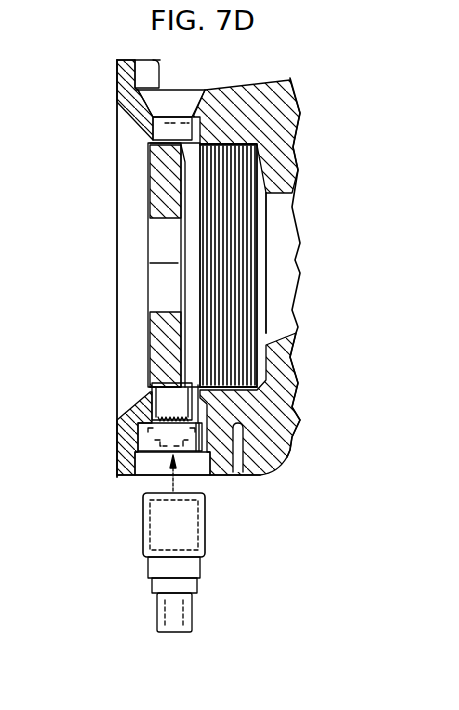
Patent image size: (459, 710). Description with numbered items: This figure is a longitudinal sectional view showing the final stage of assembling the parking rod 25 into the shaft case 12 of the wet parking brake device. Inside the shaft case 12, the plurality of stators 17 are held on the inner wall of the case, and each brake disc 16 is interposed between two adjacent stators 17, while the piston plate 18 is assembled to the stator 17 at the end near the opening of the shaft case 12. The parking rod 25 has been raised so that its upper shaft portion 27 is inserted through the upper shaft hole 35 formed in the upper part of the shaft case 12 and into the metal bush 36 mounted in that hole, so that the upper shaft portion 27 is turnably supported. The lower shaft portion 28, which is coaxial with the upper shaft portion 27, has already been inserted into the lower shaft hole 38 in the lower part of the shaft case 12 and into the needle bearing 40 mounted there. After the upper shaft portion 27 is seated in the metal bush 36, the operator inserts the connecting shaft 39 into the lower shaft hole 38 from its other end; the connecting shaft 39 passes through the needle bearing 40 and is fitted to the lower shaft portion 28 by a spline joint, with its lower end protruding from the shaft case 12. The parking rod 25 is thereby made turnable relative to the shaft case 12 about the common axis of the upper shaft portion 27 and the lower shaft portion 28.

The shaft case 12 is at (237, 90).
The brake disc 16 is at (252, 270).
The stator 17 is at (323, 263).
The piston plate 18 is at (185, 243).
The parking rod 25 is at (145, 204).
The upper shaft portion 27 is at (135, 107).
The lower shaft portion 28 is at (123, 421).
The upper shaft hole 35 is at (171, 106).
The metal bush 36 is at (188, 110).
The lower shaft hole 38 is at (137, 403).
The connecting shaft 39 is at (205, 537).
The needle bearing 40 is at (140, 448).